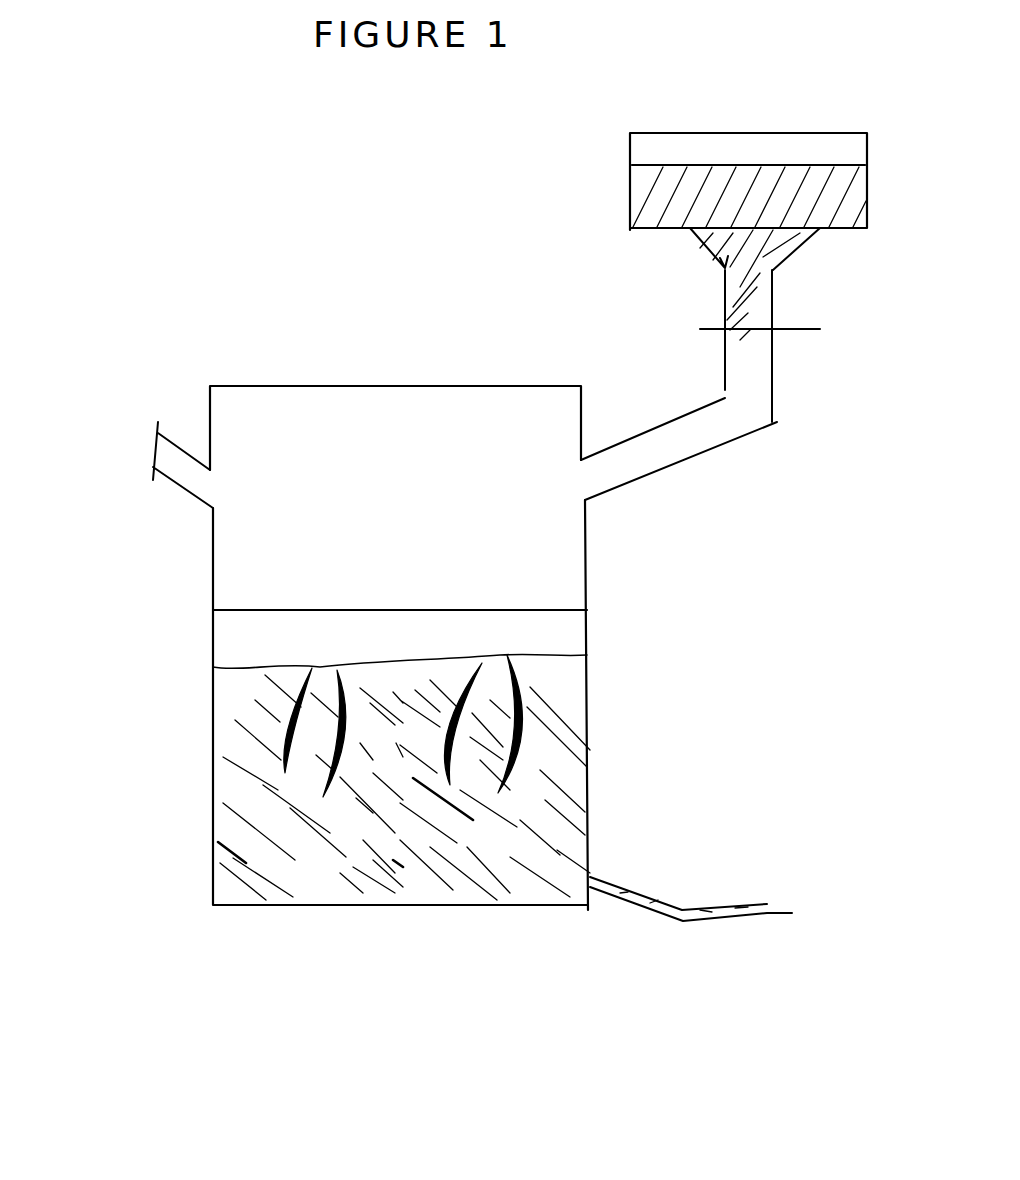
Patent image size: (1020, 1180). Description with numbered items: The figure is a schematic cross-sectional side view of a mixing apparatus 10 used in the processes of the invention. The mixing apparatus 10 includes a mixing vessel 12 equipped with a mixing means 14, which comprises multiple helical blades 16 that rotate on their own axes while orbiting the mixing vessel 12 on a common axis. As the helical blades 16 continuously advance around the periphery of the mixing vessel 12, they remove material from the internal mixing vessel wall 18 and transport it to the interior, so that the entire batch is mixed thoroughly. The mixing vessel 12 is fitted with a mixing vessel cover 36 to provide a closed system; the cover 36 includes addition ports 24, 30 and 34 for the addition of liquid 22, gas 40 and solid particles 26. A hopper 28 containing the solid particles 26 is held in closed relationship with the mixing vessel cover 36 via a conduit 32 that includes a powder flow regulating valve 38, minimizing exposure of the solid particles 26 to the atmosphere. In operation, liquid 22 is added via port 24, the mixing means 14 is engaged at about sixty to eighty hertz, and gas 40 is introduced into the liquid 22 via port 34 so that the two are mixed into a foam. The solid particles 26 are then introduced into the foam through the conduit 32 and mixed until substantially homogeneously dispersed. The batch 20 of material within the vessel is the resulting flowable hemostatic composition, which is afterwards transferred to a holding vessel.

The mixing apparatus 10 is at (247, 965).
The mixing vessel 12 is at (588, 703).
The mixing means 14 is at (282, 772).
The helical blades 16 is at (288, 715).
The internal mixing vessel wall 18 is at (588, 803).
The liquid mixture 20 is at (393, 860).
The liquid 22 is at (250, 863).
The addition port 24 is at (157, 460).
The solid particles 26 is at (648, 200).
The hopper 28 is at (632, 150).
The addition port 30 is at (650, 413).
The conduit 32 is at (755, 368).
The addition port 34 is at (685, 907).
The mixing vessel cover 36 is at (302, 410).
The powder flow regulating valve 38 is at (815, 336).
The gas 40 is at (712, 913).